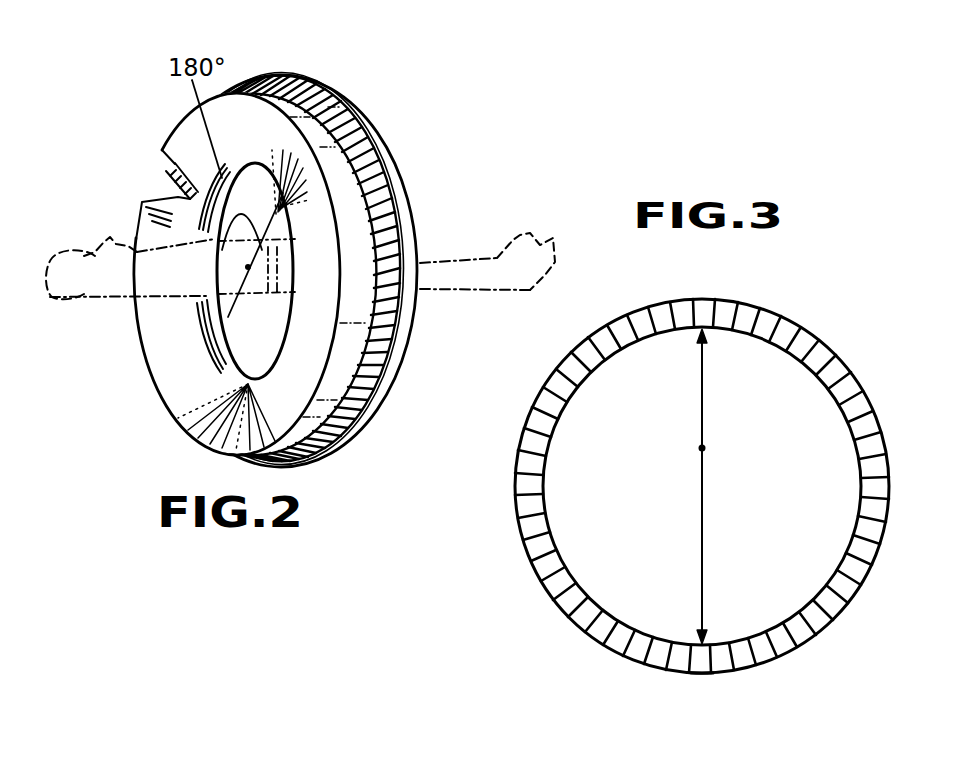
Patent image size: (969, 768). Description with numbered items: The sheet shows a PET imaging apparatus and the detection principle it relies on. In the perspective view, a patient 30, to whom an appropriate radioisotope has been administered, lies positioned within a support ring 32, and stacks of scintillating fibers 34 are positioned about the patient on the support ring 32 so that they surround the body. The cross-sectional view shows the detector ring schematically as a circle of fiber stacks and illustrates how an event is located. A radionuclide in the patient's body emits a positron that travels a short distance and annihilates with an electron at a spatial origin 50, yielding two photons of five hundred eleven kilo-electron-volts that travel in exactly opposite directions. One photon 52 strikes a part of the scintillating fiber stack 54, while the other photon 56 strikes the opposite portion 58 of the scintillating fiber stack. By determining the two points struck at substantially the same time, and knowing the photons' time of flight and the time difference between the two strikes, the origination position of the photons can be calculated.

In FIG. 2, the patient 30 is at (100, 242).
In FIG. 2, the support ring 32 is at (405, 195).
In FIG. 2, the stacks of scintillating fibers 34 is at (332, 92).
In FIG. 3, the spatial origin 50 is at (703, 448).
In FIG. 3, the photon 52 is at (712, 338).
In FIG. 3, the part of the scintillating fiber stack 54 is at (699, 298).
In FIG. 3, the photon 56 is at (701, 641).
In FIG. 3, the opposite portion of the scintillating fiber stack 58 is at (694, 673).